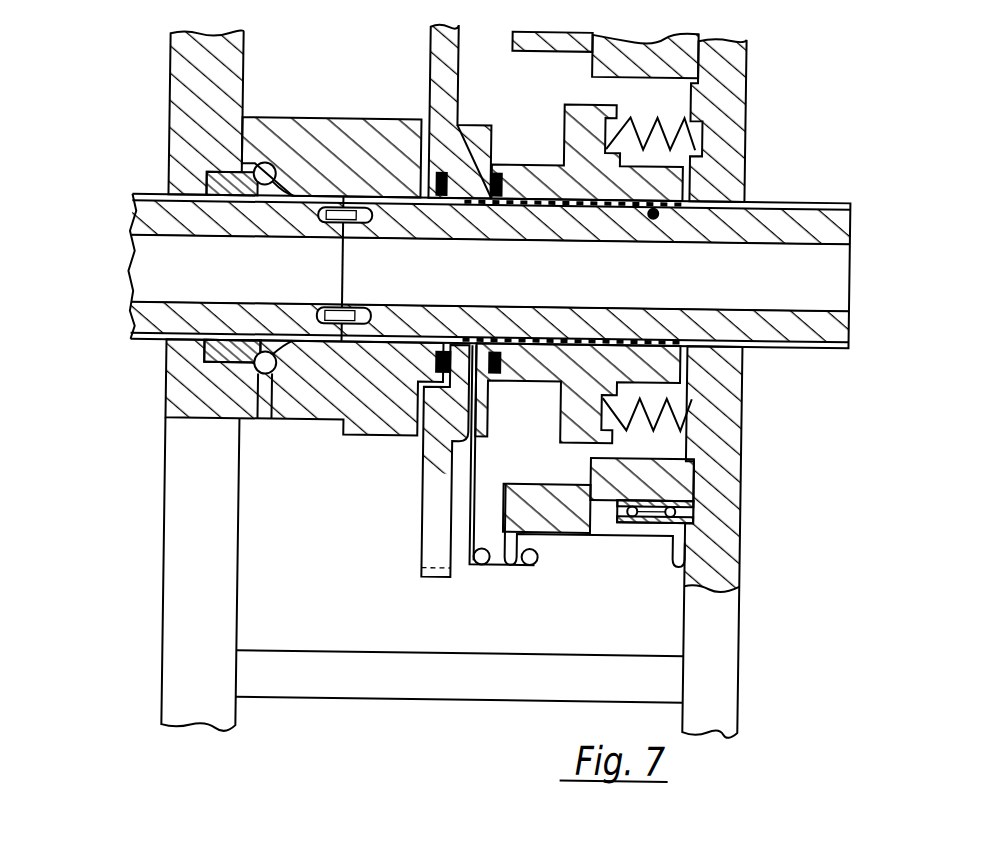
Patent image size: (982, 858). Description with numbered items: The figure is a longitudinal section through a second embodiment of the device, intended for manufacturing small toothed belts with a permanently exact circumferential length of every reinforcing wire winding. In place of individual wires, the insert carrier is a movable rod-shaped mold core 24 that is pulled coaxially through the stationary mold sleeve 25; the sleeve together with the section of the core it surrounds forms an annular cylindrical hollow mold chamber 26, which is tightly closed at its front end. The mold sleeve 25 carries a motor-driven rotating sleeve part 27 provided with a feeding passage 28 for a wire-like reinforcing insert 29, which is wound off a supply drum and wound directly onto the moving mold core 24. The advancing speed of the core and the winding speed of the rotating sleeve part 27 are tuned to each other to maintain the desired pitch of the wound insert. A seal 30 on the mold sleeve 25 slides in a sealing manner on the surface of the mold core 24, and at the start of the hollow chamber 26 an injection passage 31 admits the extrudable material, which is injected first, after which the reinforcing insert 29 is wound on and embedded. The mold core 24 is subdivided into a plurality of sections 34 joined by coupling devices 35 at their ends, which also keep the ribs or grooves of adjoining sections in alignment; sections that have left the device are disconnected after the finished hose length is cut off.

The mold core 24 is at (797, 200).
The mold sleeve 25 is at (335, 155).
The hollow mold chamber 26 is at (386, 203).
The rotating sleeve part 27 is at (435, 524).
The feeding passage 28 is at (480, 397).
The reinforcing insert 29 is at (472, 550).
The seal 30 is at (166, 153).
The injection passage 31 is at (275, 167).
The sections 34 is at (149, 277).
The coupling devices 35 is at (331, 320).